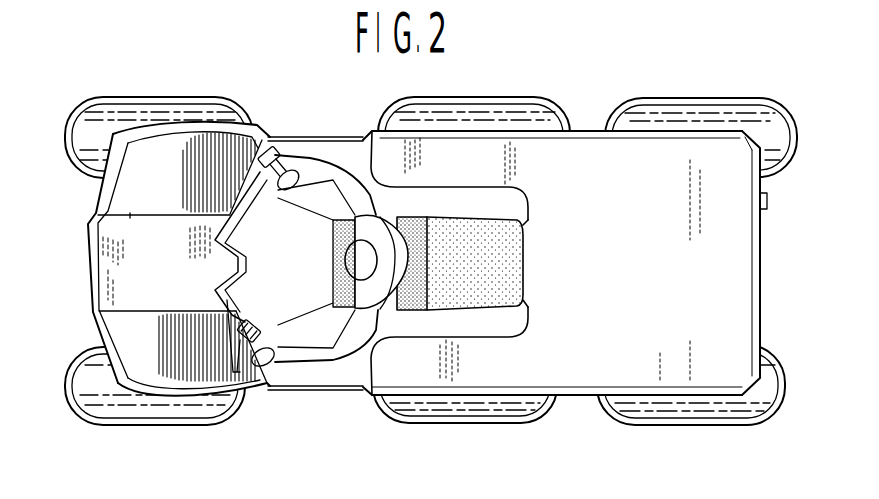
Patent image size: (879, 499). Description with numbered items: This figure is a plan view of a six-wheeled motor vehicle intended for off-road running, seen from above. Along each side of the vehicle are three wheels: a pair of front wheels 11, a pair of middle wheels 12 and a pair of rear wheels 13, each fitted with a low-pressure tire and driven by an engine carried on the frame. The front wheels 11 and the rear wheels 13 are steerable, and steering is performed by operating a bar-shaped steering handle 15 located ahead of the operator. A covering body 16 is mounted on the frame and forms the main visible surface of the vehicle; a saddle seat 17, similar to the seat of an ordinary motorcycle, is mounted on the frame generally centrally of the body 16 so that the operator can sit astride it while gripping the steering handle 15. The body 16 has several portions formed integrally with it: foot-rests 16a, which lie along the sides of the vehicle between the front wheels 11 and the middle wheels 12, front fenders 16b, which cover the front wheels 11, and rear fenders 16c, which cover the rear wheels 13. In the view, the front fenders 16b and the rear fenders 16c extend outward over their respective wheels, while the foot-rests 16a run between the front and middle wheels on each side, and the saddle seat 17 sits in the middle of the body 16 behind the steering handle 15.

The front wheels 11 is at (103, 412).
The middle wheels 12 is at (422, 415).
The rear wheels 13 is at (647, 413).
The steering handle 15 is at (235, 402).
The body 16 is at (667, 182).
The foot-rests 16a is at (322, 146).
The front fenders 16b is at (178, 142).
The rear fenders 16c is at (582, 138).
The saddle seat 17 is at (420, 215).